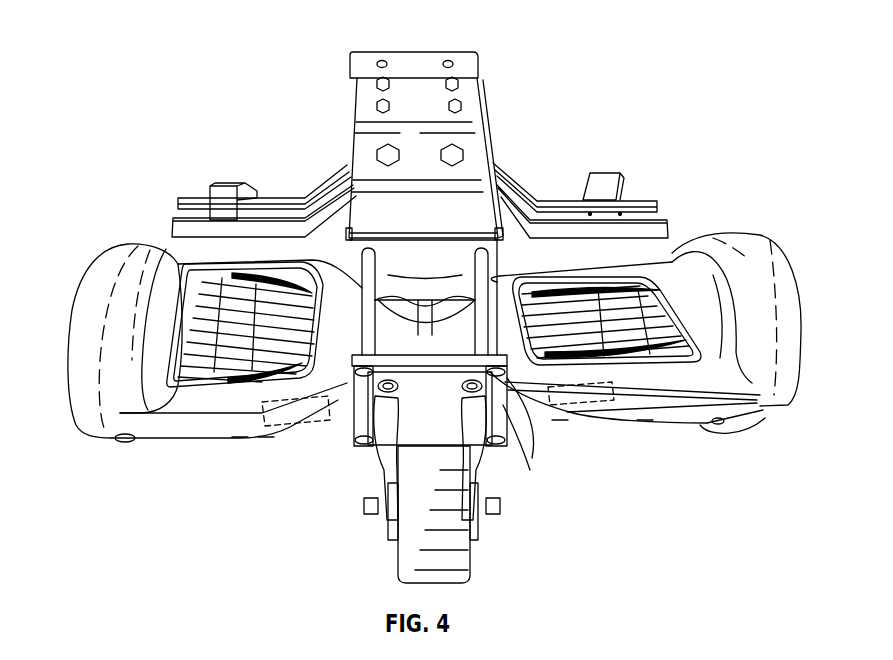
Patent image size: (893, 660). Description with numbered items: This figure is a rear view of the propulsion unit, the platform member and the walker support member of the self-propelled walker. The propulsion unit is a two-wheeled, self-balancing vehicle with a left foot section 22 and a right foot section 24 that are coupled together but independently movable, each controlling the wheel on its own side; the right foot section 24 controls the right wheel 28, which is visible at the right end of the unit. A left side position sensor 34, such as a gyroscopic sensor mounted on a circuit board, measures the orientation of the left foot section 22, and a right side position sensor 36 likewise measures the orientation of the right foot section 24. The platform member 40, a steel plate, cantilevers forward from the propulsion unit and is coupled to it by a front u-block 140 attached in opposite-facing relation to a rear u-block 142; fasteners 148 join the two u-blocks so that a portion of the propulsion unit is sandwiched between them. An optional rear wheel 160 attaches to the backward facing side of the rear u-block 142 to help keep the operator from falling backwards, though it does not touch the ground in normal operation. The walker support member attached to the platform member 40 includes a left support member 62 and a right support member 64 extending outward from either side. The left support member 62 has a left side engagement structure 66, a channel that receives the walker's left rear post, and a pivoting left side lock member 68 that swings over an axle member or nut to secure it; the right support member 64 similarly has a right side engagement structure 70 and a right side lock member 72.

The platform member 40 is at (422, 24).
The left support member 62 is at (330, 173).
The right support member 64 is at (527, 183).
The left side engagement structure 66 is at (192, 217).
The left side lock member 68 is at (233, 183).
The right side engagement structure 70 is at (638, 218).
The right side lock member 72 is at (607, 175).
The front u-block 140 is at (425, 292).
The rear u-block 142 is at (401, 351).
The fasteners 148 is at (367, 442).
The rear wheel 160 is at (472, 566).
The left foot section 22 is at (198, 372).
The right foot section 24 is at (620, 363).
The left side position sensor 34 is at (305, 430).
The right side position sensor 36 is at (575, 425).
The right wheel 28 is at (747, 432).